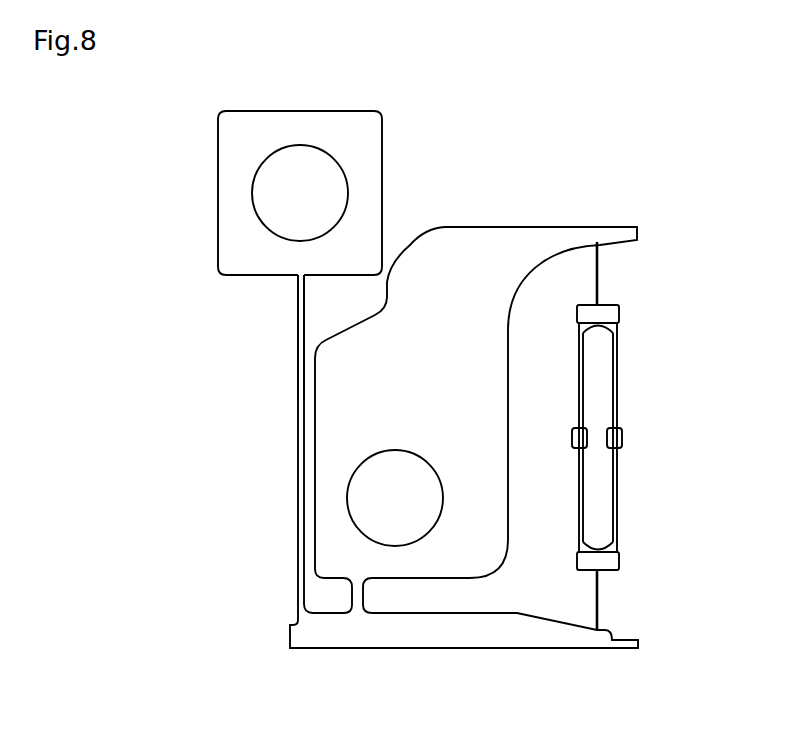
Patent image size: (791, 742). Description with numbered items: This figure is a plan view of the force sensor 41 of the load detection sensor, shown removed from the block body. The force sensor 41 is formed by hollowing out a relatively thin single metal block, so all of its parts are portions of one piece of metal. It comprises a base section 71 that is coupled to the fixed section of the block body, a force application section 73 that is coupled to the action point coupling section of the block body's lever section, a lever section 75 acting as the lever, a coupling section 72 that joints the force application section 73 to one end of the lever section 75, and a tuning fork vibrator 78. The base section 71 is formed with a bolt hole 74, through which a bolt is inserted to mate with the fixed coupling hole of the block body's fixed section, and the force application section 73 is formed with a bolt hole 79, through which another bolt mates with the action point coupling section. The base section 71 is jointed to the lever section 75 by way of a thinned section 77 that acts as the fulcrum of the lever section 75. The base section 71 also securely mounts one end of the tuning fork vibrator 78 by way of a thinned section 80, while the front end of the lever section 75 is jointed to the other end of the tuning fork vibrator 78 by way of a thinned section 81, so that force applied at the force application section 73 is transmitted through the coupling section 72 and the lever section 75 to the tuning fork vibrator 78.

The force sensor 41 is at (522, 137).
The base section 71 is at (428, 231).
The coupling section 72 is at (292, 368).
The force application section 73 is at (306, 112).
The bolt hole 74 is at (443, 493).
The lever section 75 is at (419, 650).
The thinned section 77 is at (365, 602).
The tuning fork vibrator 78 is at (635, 371).
The bolt hole 79 is at (258, 165).
The thinned section 80 is at (601, 256).
The thinned section 81 is at (600, 601).